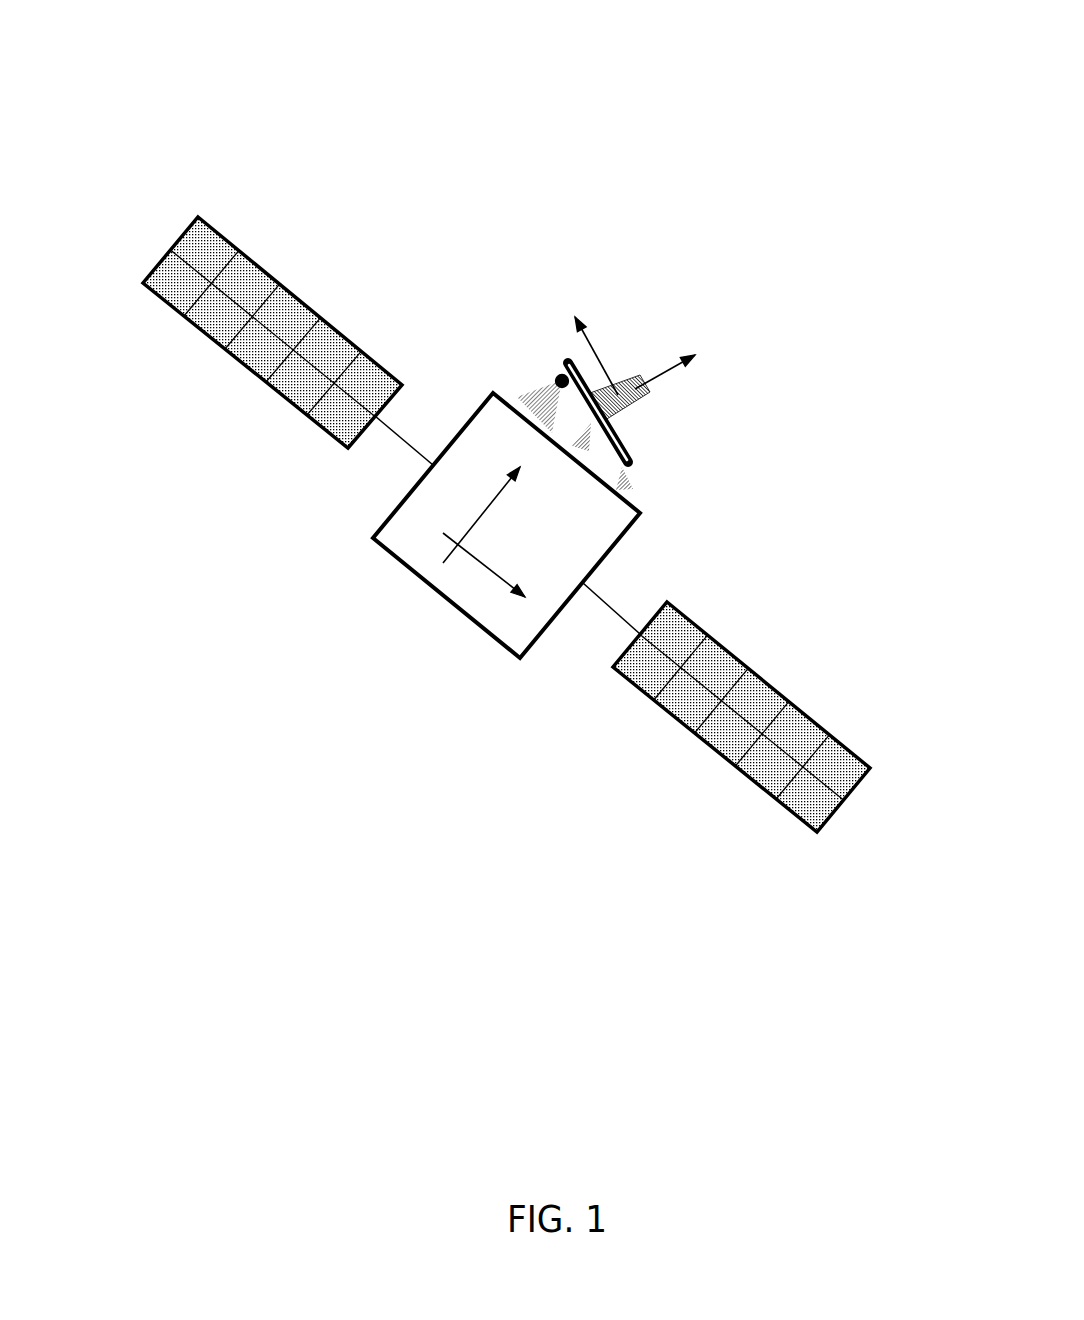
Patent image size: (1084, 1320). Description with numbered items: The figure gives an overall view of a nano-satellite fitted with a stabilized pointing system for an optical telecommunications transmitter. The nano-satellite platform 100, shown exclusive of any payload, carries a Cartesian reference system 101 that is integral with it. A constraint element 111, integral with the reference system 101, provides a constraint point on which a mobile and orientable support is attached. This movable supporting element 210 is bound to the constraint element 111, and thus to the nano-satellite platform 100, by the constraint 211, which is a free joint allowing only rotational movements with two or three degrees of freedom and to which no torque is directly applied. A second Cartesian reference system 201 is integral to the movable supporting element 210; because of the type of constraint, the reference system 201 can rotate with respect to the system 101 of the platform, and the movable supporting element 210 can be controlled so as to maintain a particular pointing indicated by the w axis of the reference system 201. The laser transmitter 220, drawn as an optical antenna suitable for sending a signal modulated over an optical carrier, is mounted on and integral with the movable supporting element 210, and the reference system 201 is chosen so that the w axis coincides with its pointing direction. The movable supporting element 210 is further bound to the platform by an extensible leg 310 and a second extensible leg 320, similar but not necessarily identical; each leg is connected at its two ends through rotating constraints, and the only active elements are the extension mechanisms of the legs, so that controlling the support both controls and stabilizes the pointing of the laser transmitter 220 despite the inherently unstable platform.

The nano-satellite platform 100 is at (498, 418).
The Cartesian reference system 101 is at (478, 570).
The constraint element 111 is at (537, 398).
The Cartesian reference system 201 is at (632, 263).
The movable supporting element 210 is at (625, 437).
The constraint 211 is at (555, 377).
The laser transmitter 220 is at (642, 404).
The extensible leg 310 is at (594, 446).
The second extensible leg 320 is at (633, 481).